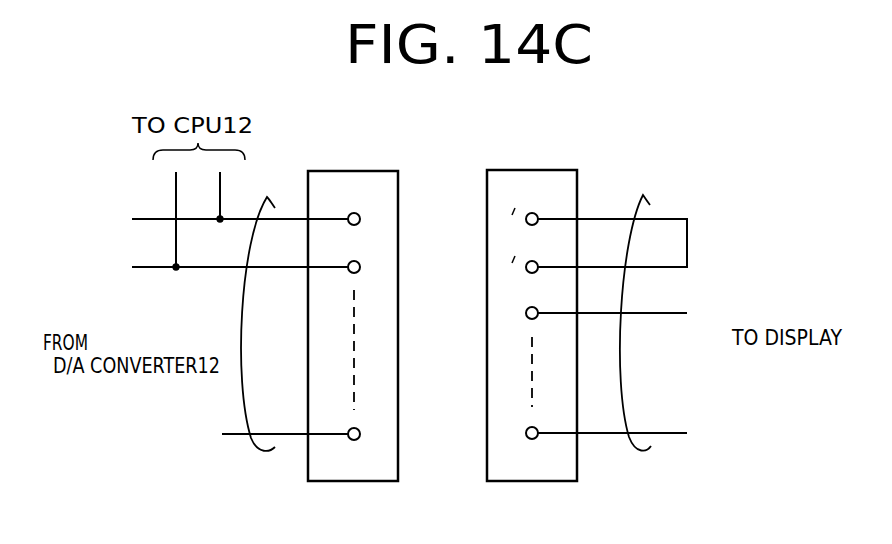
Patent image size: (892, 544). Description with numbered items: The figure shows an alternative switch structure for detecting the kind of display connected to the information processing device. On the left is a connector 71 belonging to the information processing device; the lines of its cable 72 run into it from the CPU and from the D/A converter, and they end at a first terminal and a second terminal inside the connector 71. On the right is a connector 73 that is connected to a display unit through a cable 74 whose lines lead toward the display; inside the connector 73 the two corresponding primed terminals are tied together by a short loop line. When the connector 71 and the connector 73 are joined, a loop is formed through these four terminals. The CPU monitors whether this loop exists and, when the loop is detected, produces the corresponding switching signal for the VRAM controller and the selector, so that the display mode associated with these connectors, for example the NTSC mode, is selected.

The connector 71 is at (381, 171).
The input wiring from CPU and D/A converter 72 is at (270, 201).
The connector 73 is at (536, 170).
The output wiring to display 74 is at (646, 198).